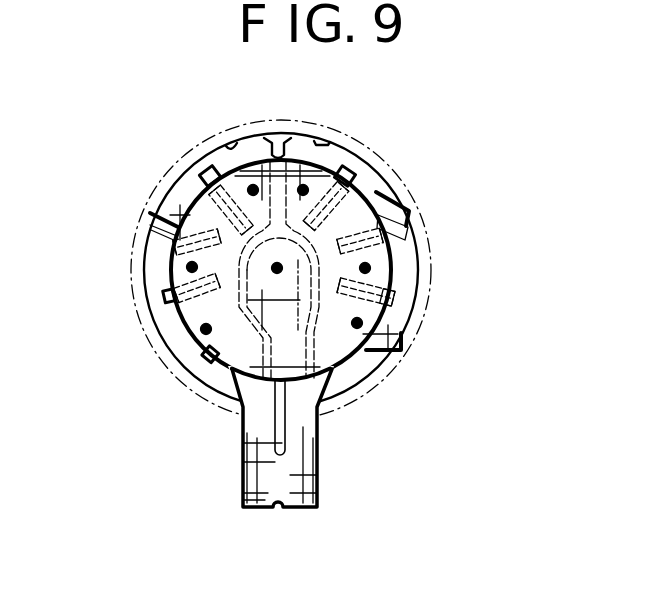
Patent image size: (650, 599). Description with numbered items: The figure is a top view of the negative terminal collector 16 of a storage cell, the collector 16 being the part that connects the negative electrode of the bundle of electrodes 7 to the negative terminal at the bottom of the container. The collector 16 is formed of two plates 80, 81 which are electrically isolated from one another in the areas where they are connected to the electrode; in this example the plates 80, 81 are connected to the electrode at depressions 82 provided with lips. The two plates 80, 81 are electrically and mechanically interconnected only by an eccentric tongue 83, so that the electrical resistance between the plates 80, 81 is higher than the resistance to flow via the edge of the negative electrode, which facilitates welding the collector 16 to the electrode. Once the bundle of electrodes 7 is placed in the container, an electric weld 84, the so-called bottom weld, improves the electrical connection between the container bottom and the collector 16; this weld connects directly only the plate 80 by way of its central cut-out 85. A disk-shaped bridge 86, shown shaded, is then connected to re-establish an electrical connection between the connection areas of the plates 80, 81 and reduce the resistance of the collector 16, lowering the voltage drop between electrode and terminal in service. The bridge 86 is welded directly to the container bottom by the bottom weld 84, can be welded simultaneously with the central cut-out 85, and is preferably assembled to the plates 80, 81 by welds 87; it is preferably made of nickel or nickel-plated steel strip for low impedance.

The bundle of electrodes 7 is at (357, 136).
The plate 80 is at (356, 168).
The plate 81 is at (156, 255).
The depressions with lips 82 is at (233, 208).
The eccentric tongue 83 is at (243, 477).
The electric weld 84 is at (276, 271).
The central cut-out 85 is at (253, 288).
The disk-shaped bridge 86 is at (378, 204).
The welds 87 is at (368, 272).
The collector 16 is at (385, 356).